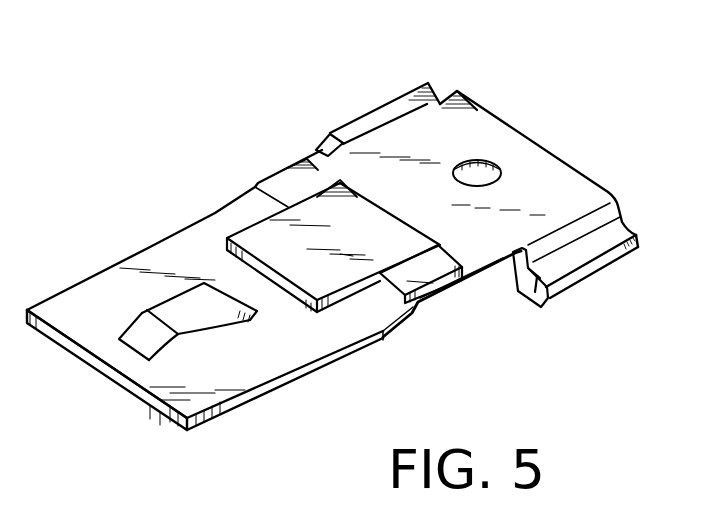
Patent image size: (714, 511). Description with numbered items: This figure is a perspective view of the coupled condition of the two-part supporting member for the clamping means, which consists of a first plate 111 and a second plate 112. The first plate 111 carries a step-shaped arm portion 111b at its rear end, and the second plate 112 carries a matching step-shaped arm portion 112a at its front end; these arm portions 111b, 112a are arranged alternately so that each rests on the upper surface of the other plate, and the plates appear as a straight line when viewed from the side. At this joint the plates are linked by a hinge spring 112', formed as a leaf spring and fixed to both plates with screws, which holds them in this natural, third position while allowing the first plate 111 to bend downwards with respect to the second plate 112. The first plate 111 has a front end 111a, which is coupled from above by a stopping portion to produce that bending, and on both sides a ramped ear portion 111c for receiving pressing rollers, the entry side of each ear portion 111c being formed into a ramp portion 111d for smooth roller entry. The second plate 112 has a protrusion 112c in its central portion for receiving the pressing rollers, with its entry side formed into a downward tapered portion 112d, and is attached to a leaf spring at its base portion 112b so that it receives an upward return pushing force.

The first plate 111 is at (415, 133).
The front end 111a is at (552, 178).
The arm portion 111b is at (253, 238).
The ear portion 111c is at (367, 120).
The ramp portion 111d is at (320, 134).
The second plate 112 is at (205, 290).
The arm portion 112a is at (290, 176).
The base portion 112b is at (120, 363).
The protrusion 112c is at (207, 313).
The downward tapered portion 112d is at (147, 352).
The hinge spring 112' is at (430, 324).